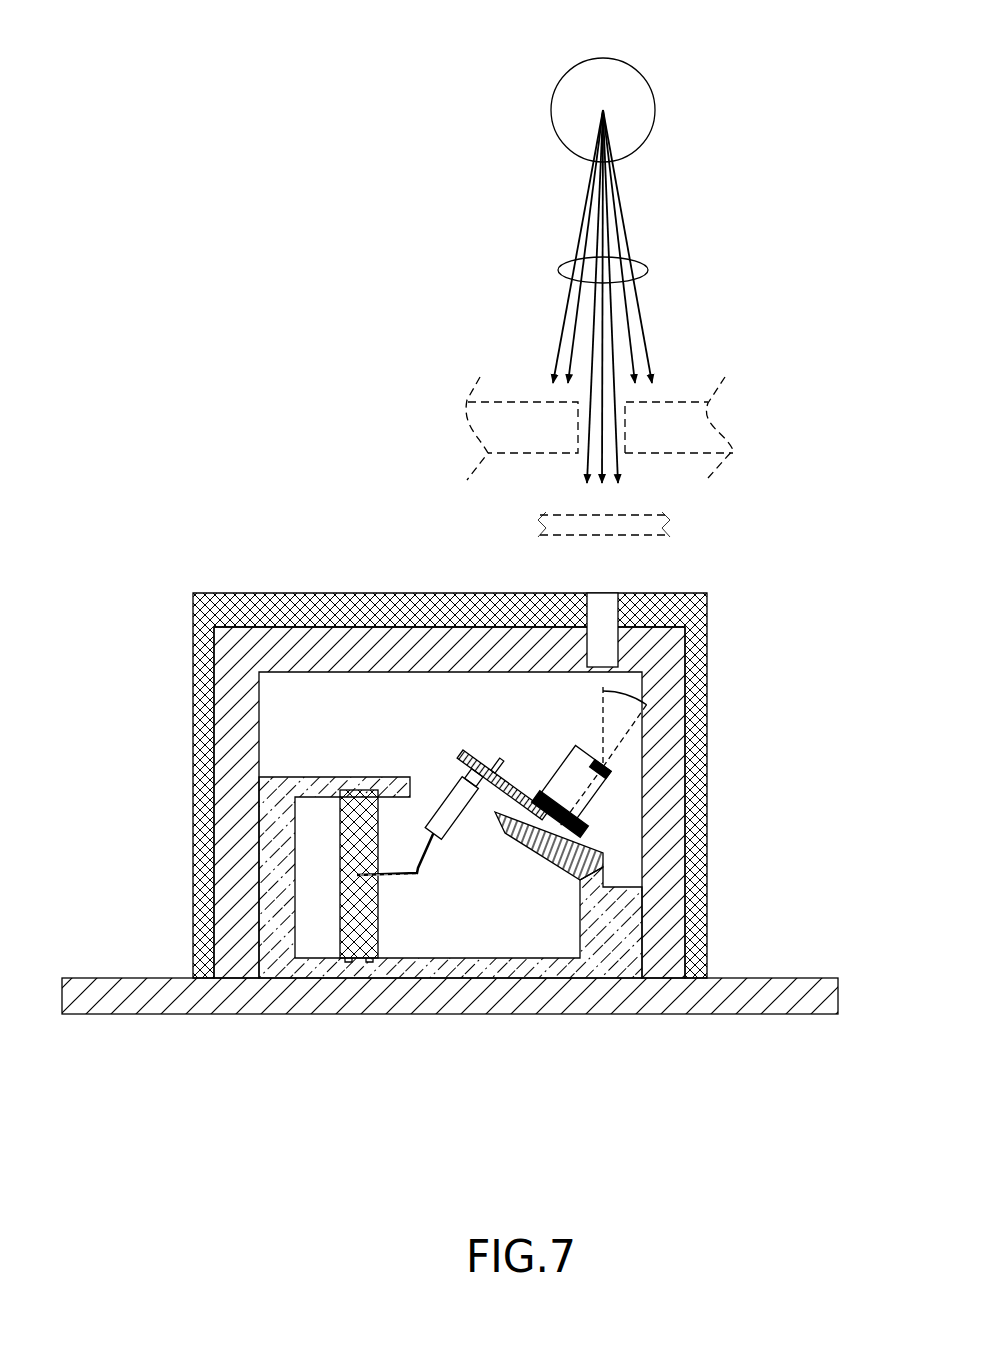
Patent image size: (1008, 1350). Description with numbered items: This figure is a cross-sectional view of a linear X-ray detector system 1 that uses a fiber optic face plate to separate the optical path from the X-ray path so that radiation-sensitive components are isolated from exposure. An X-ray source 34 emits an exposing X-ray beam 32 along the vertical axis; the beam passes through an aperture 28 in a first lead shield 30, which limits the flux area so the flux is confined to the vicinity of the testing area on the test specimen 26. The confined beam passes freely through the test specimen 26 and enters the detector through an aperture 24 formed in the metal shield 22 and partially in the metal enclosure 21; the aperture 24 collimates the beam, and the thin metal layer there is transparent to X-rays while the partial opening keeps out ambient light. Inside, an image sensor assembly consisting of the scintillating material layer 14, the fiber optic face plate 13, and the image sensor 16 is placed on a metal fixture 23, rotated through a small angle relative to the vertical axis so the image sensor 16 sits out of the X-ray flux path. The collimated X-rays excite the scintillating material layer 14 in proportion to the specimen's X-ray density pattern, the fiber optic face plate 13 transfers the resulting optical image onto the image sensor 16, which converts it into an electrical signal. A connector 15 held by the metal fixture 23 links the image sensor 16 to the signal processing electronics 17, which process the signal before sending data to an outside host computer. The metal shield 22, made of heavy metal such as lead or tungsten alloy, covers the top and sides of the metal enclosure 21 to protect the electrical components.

The linear X-ray detector system 1 is at (311, 143).
The fiber optic face plate 13 is at (596, 790).
The scintillating material layer 14 is at (612, 770).
The connector 15 is at (460, 843).
The image sensor 16 is at (600, 813).
The signal processing electronics 17 is at (337, 927).
The metal enclosure 21 is at (578, 1013).
The metal shield 22 is at (700, 950).
The metal fixture 23 is at (503, 973).
The aperture 24 is at (603, 593).
The test specimen 26 is at (553, 515).
The aperture 28 is at (620, 450).
The first lead shield 30 is at (680, 400).
The exposing X-ray beam 32 is at (647, 268).
The X-ray source 34 is at (640, 77).